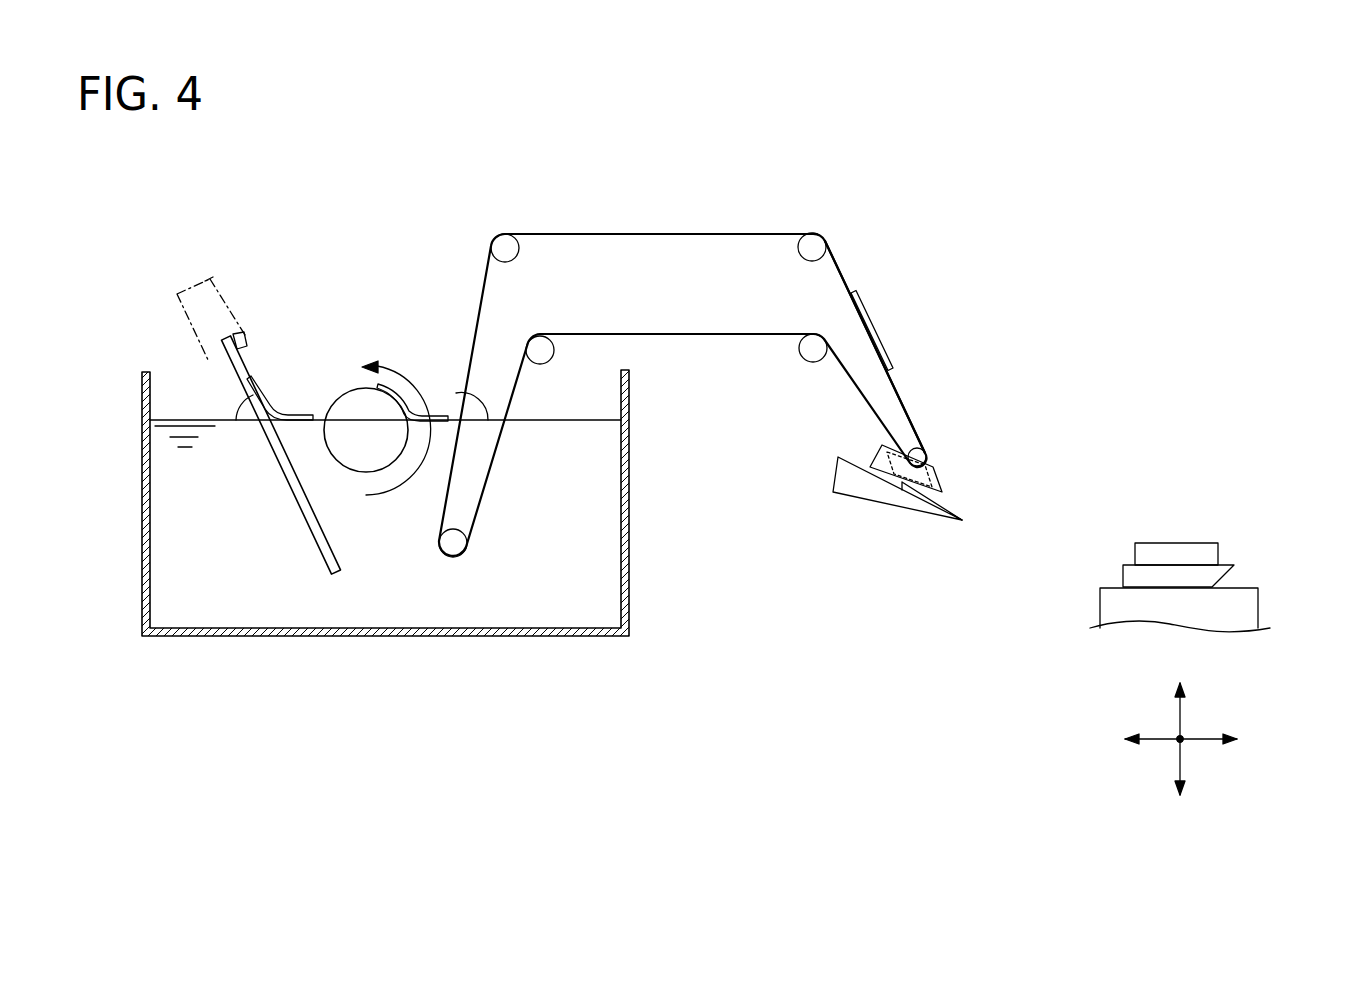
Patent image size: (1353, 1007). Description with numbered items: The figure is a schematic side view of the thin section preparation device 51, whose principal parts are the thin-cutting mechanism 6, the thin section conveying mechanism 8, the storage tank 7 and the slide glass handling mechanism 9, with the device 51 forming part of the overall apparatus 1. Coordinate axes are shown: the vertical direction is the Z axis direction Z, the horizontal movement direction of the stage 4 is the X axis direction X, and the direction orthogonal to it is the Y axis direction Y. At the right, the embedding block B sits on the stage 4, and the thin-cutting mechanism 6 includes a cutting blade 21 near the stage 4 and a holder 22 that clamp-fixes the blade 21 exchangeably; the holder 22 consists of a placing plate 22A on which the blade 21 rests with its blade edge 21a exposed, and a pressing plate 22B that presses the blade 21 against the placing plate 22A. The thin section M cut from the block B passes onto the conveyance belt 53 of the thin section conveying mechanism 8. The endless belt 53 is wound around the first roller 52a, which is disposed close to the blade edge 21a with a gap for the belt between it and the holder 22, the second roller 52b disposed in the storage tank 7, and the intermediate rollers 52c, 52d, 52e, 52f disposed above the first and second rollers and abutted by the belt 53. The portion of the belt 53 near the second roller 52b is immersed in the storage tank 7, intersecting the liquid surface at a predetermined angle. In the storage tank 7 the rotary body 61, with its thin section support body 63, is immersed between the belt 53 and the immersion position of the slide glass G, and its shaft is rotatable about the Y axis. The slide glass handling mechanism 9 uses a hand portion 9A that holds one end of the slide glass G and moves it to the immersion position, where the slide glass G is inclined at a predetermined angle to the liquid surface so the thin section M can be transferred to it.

The substrate processing apparatus 1 is at (698, 347).
The stage 4 is at (1247, 607).
The thin-cutting mechanism 6 is at (926, 475).
The storage tank 7 is at (625, 522).
The thin section conveying mechanism 8 is at (860, 263).
The slide glass handling mechanism 9 is at (259, 393).
The hand portion 9A is at (222, 298).
The cutting blade 21 is at (982, 500).
The blade edge 21a is at (960, 517).
The holder 22 is at (886, 465).
The placing plate 22A is at (838, 470).
The pressing plate 22B is at (880, 456).
The thin section preparation device 51 is at (698, 347).
The first roller 52a is at (918, 451).
The second roller 52b is at (456, 545).
The intermediate roller 52c is at (505, 245).
The intermediate roller 52d is at (812, 245).
The intermediate roller 52e is at (540, 347).
The intermediate roller 52f is at (812, 350).
The conveyance belt 53 is at (657, 231).
The rotary body 61 is at (386, 385).
The thin section support body 63 is at (352, 382).
The embedding block B is at (1177, 553).
The slide glass G is at (246, 340).
The film K is at (1215, 578).
The thin section M is at (878, 328).
The liquid W is at (385, 600).
The X axis direction X is at (1200, 740).
The Y axis direction Y is at (1180, 739).
The Z axis direction Z is at (1180, 718).